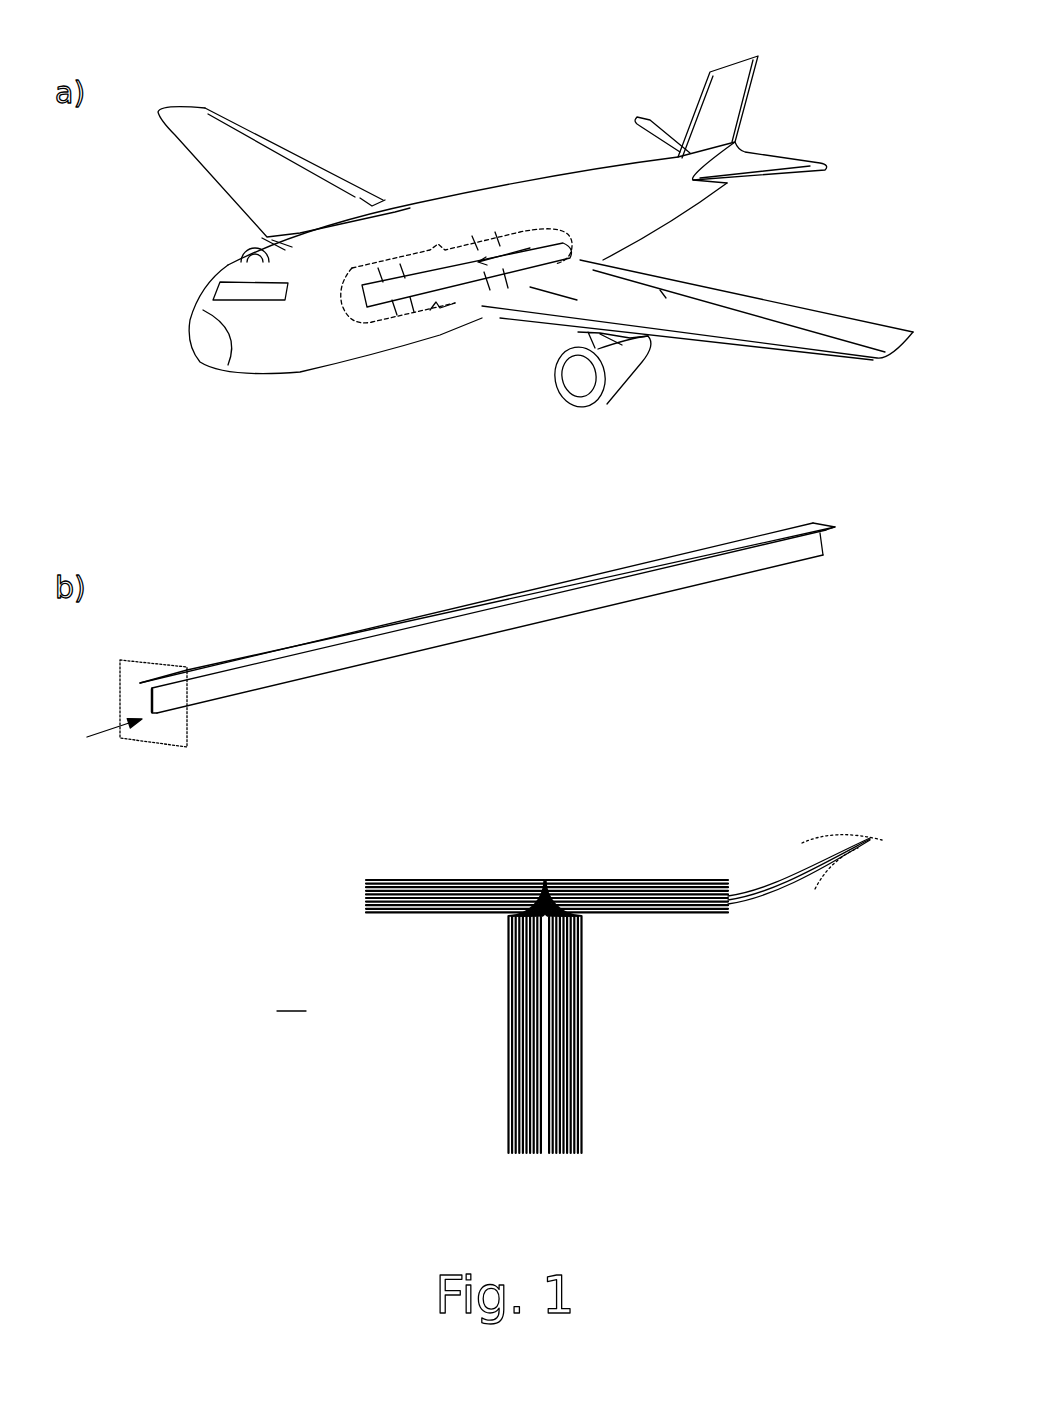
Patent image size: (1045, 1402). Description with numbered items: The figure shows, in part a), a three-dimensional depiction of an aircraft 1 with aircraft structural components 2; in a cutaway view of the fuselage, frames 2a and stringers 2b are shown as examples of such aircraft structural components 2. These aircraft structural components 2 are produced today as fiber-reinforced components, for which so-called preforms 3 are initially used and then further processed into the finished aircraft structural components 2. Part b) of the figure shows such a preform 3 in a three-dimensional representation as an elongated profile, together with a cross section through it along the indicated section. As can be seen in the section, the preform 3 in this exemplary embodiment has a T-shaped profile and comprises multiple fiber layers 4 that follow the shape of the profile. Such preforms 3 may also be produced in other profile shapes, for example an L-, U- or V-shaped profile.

The aircraft 1 is at (256, 84).
The aircraft structural components 2 is at (476, 206).
The frames 2a is at (493, 240).
The stringers 2b is at (560, 240).
The preform 3 is at (289, 596).
The fiber layers 4 is at (868, 839).